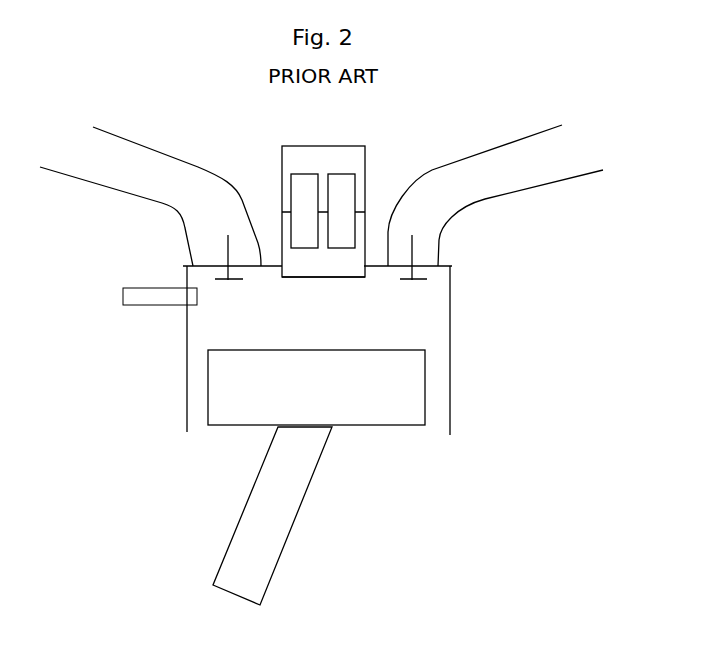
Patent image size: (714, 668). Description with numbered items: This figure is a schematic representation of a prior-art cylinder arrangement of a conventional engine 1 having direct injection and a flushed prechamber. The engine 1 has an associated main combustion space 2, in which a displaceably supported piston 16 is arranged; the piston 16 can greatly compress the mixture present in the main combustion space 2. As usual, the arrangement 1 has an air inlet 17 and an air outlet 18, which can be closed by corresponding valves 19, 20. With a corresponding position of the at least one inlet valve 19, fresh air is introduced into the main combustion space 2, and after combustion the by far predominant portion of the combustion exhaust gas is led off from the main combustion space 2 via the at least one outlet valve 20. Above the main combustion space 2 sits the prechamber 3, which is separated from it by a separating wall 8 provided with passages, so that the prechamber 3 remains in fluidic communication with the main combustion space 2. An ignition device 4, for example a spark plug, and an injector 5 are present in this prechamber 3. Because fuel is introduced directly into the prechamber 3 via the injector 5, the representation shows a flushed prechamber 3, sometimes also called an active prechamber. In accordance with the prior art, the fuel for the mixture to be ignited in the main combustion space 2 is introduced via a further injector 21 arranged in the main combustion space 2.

The engine 1 is at (468, 113).
The main combustion space 2 is at (430, 330).
The prechamber 3 is at (353, 260).
The ignition device 4 is at (343, 183).
The injector 5 is at (302, 190).
The separating wall 8 is at (315, 278).
The piston 16 is at (350, 412).
The air inlet 17 is at (147, 172).
The air outlet 18 is at (533, 163).
The inlet valve 19 is at (225, 252).
The outlet valve 20 is at (412, 243).
The injector 21 is at (147, 300).